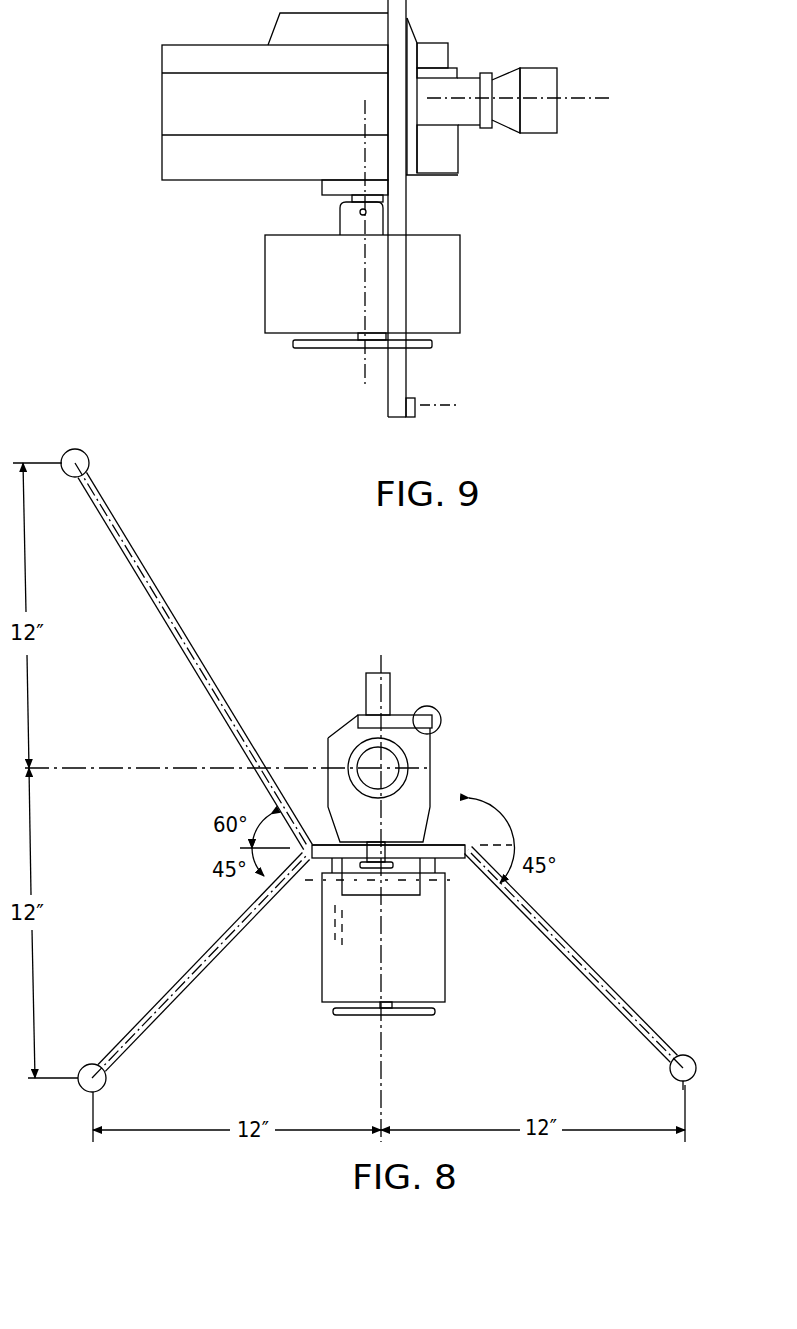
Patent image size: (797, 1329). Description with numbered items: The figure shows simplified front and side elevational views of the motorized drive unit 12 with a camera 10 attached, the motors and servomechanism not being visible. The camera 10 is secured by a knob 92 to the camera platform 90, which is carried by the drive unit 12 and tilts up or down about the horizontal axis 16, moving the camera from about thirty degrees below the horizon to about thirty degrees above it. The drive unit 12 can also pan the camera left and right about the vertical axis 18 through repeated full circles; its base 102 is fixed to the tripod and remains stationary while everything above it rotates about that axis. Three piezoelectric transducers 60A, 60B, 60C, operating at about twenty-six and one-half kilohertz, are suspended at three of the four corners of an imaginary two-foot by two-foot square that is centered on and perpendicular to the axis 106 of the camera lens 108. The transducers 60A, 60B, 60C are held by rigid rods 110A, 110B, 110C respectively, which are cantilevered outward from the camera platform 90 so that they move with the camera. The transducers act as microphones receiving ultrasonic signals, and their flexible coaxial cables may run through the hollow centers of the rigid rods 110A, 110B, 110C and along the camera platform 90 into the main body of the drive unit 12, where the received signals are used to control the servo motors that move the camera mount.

In FIG. 9, the camera 10 is at (162, 113).
In FIG. 8, the camera 10 is at (402, 705).
In FIG. 9, the drive unit 12 is at (463, 287).
In FIG. 8, the drive unit 12 is at (449, 965).
In FIG. 9, the horizontal axis 16 is at (352, 208).
In FIG. 8, the horizontal axis 16 is at (450, 877).
In FIG. 9, the vertical axis 18 is at (365, 370).
In FIG. 8, the vertical axis 18 is at (386, 1059).
In FIG. 9, the transducer 60A is at (402, 418).
In FIG. 8, the transducer 60A is at (91, 1066).
In FIG. 8, the transducer 60B is at (693, 1053).
In FIG. 8, the transducer 60C is at (82, 451).
In FIG. 9, the camera platform 90 is at (322, 188).
In FIG. 8, the camera platform 90 is at (428, 847).
In FIG. 8, the knob 92 is at (366, 845).
In FIG. 9, the base 102 is at (308, 349).
In FIG. 8, the base 102 is at (356, 1017).
In FIG. 9, the axis of the camera lens 106 is at (594, 98).
In FIG. 8, the axis of the camera lens 106 is at (384, 772).
In FIG. 9, the camera lens 108 is at (531, 72).
In FIG. 8, the camera lens 108 is at (408, 762).
In FIG. 9, the rigid rod 110A is at (410, 367).
In FIG. 8, the rigid rod 110A is at (194, 970).
In FIG. 8, the rigid rod 110B is at (603, 977).
In FIG. 9, the rigid rod 110C is at (386, 57).
In FIG. 8, the rigid rod 110C is at (178, 619).